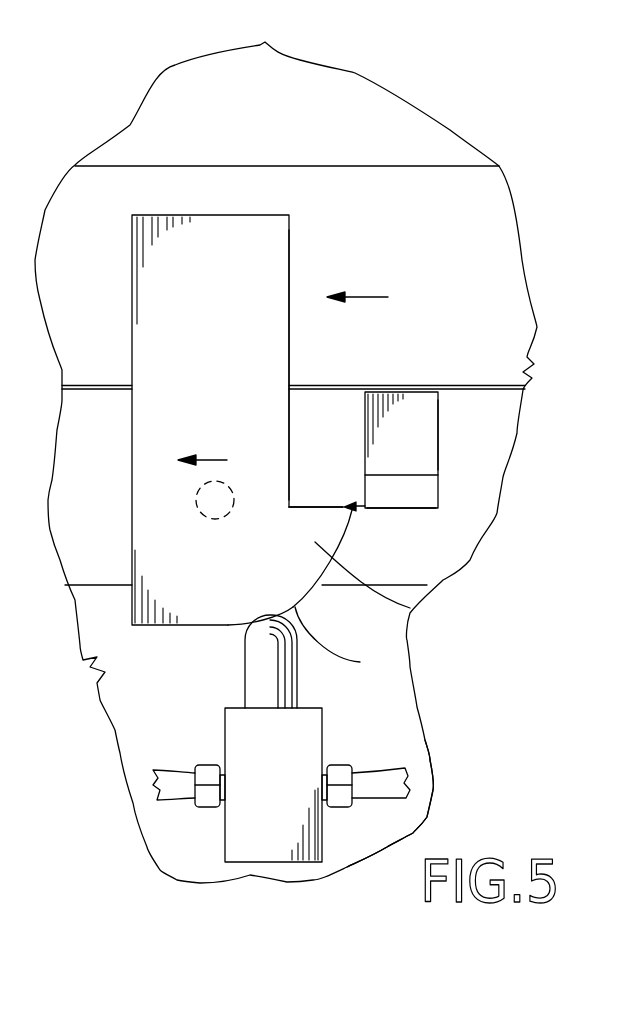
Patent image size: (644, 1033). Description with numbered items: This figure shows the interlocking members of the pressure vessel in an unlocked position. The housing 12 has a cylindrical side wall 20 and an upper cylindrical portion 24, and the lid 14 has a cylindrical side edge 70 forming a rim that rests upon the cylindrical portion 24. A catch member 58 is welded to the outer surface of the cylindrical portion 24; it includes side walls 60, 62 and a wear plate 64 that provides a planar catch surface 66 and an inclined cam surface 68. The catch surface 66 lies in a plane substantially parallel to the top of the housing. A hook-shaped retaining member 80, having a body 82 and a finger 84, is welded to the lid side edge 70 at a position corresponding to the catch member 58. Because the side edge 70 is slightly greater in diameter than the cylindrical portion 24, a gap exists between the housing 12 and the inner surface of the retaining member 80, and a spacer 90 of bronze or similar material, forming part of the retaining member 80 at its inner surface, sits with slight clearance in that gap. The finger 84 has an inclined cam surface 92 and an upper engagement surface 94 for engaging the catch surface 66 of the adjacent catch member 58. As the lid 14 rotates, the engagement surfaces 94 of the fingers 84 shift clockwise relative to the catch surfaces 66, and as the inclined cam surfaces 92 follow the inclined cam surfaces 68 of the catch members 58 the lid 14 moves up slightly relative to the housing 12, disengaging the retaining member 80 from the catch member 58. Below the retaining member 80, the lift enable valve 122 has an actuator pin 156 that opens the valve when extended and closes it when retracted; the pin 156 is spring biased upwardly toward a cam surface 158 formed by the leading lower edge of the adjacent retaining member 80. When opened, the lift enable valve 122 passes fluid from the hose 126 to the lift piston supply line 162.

The housing 12 is at (385, 712).
The lid 14 is at (364, 99).
The cylindrical side wall 20 is at (393, 645).
The upper cylindrical portion 24 is at (497, 412).
The catch member 58 is at (408, 412).
The side wall 60 is at (362, 417).
The side wall 62 is at (440, 432).
The wear plate 64 is at (420, 492).
The catch surface 66 is at (408, 508).
The inclined cam surface 68 is at (363, 508).
The cylindrical side edge 70 is at (499, 225).
The retaining member 80 is at (246, 266).
The body 82 is at (240, 383).
The finger 84 is at (408, 607).
The spacer 90 is at (232, 512).
The inclined cam surface 92 is at (352, 504).
The engagement surface 94 is at (312, 505).
The lift enable valve 122 is at (253, 830).
The hose 126 is at (165, 805).
The actuator pin 156 is at (262, 663).
The cam surface 158 is at (360, 662).
The lift piston supply line 162 is at (370, 783).